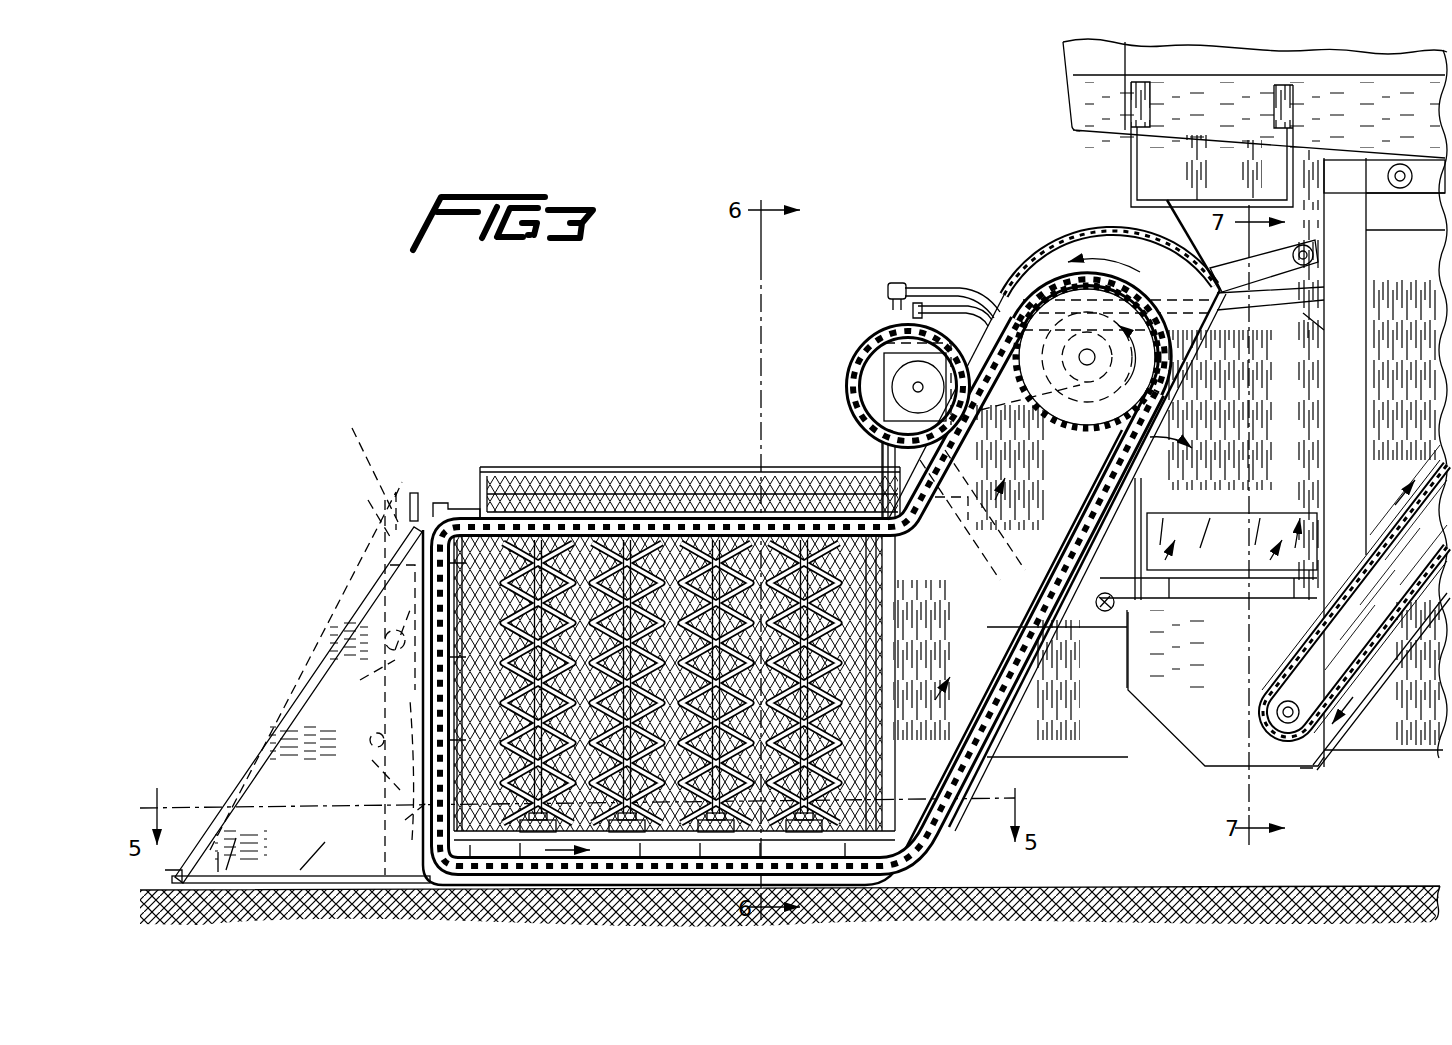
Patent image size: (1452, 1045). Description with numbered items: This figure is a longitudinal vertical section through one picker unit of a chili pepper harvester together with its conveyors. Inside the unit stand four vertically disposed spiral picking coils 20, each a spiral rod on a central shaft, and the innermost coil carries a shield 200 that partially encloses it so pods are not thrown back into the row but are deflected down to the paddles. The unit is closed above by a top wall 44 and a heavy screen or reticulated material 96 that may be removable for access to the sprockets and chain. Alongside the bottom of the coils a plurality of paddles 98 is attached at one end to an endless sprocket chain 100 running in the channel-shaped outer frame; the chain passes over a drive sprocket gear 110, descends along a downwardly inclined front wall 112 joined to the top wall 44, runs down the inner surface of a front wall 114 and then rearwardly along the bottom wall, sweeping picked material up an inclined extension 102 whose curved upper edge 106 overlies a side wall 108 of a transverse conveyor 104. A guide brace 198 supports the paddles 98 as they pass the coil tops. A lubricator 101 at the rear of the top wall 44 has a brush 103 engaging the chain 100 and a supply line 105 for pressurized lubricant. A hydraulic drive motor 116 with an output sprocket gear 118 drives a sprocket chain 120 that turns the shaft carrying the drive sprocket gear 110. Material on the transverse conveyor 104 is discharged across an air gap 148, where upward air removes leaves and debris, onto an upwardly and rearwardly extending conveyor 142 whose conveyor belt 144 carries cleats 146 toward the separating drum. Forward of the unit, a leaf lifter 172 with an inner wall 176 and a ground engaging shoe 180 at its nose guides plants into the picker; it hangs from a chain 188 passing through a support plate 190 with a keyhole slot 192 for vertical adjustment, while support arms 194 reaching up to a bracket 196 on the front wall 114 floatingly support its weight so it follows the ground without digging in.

The spiral picking coil 20 is at (565, 536).
The top wall 44 is at (480, 503).
The reticulated material 96 is at (618, 467).
The paddles 98 is at (1025, 600).
The sprocket chain 100 is at (1017, 717).
The lubricator 101 is at (845, 468).
The inclined extension 102 is at (1022, 655).
The brush 103 is at (884, 572).
The transverse conveyor 104 is at (1292, 498).
The supply line 105 is at (882, 442).
The curved upper edge 106 is at (1200, 430).
The side wall 108 is at (1142, 498).
The drive sprocket gear 110 is at (1060, 415).
The front wall 112 is at (1055, 236).
The front wall 114 is at (413, 493).
The hydraulic drive motor 116 is at (888, 333).
The output sprocket gear 118 is at (856, 368).
The sprocket chain 120 is at (957, 303).
The upwardly and rearwardly extending conveyor 142 is at (1388, 695).
The conveyor belt 144 is at (1358, 577).
The cleats 146 is at (1390, 518).
The air gap 148 is at (1212, 596).
The leaf lifters 172 is at (350, 565).
The inner wall 176 is at (308, 710).
The ground engaging shoe 180 is at (172, 872).
The chain 188 is at (300, 658).
The support plate 190 is at (361, 461).
The keyhole slot 192 is at (362, 510).
The support arms 194 is at (369, 702).
The bracket 196 is at (400, 818).
The guide brace 198 is at (920, 520).
The shield 200 is at (882, 672).